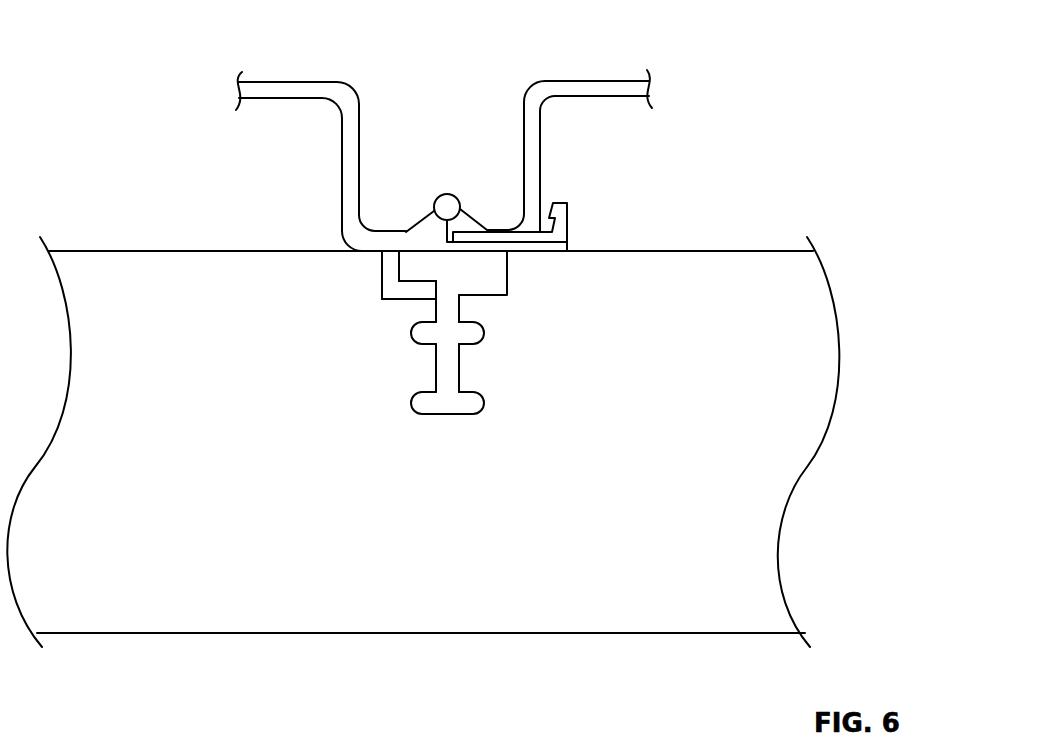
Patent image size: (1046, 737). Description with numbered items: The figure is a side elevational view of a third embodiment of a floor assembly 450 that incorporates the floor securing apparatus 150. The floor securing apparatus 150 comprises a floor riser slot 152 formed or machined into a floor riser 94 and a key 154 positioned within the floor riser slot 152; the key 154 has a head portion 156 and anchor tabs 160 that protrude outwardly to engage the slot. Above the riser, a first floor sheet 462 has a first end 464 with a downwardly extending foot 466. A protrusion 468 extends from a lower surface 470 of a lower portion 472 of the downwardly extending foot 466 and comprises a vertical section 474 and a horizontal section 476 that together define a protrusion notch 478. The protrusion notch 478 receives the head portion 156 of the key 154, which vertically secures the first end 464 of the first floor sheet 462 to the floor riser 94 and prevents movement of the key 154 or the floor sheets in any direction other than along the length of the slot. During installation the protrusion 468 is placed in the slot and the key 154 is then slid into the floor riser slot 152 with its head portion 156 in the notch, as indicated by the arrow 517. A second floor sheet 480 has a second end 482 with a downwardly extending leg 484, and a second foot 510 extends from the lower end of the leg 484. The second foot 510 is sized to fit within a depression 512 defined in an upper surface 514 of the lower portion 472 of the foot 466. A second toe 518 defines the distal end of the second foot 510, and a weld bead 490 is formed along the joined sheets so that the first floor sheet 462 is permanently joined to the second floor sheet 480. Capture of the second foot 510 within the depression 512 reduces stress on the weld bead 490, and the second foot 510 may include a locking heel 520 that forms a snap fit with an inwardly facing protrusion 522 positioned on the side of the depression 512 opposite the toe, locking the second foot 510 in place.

The floor riser 94 is at (743, 247).
The floor securing apparatus 150 is at (437, 384).
The floor riser slot 152 is at (402, 342).
The key 154 is at (454, 411).
The head portion 156 is at (488, 293).
The anchor tab 160 is at (482, 401).
The floor assembly 450 is at (448, 102).
The first floor sheet 462 is at (253, 78).
The first end 464 is at (338, 78).
The downwardly extending foot 466 is at (336, 161).
The protrusion 468 is at (378, 296).
The lower surface 470 is at (549, 248).
The lower portion 472 is at (347, 239).
The vertical section 474 is at (378, 264).
The horizontal section 476 is at (407, 296).
The protrusion notch 478 is at (424, 265).
The second floor sheet 480 is at (603, 76).
The second end 482 is at (532, 78).
The downwardly extending leg 484 is at (538, 111).
The weld bead 490 is at (444, 190).
The second foot 510 is at (488, 226).
The depression 512 is at (547, 191).
The upper surface 514 is at (384, 227).
The insertion direction 517 is at (345, 257).
The second toe 518 is at (462, 197).
The locking heel 520 is at (554, 232).
The inwardly facing protrusion 522 is at (558, 226).